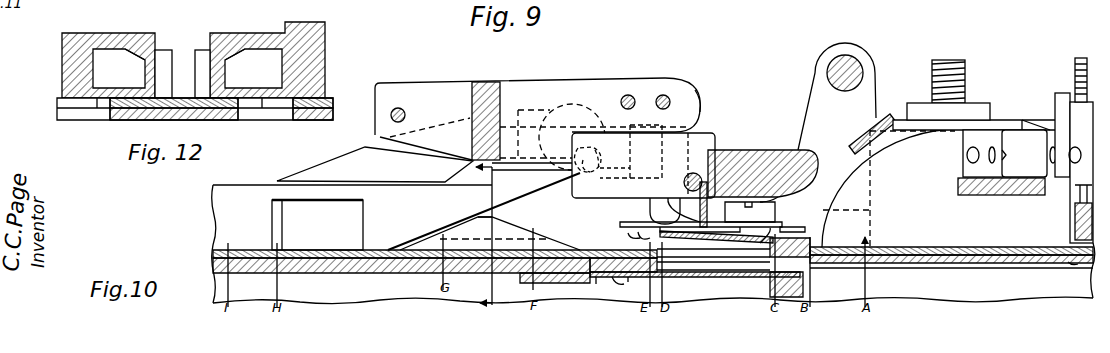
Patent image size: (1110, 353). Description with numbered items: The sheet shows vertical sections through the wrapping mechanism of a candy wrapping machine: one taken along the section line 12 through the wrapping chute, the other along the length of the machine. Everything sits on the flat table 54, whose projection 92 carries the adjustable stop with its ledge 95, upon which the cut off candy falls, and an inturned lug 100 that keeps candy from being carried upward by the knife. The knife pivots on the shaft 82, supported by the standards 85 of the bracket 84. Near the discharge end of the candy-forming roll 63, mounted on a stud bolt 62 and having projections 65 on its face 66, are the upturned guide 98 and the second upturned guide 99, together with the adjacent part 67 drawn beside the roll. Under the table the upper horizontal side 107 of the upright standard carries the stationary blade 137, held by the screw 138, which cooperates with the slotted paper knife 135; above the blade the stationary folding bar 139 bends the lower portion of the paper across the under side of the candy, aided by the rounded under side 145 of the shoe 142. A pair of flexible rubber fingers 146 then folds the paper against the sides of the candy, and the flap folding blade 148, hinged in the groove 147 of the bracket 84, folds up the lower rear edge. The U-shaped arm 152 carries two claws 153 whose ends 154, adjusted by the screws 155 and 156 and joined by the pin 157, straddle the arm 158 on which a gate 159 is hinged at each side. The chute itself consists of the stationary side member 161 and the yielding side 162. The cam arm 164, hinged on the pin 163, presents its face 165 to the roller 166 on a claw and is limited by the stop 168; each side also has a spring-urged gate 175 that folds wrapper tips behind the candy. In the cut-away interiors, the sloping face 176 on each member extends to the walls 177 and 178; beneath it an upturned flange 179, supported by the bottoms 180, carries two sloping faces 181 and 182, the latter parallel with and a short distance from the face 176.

In FIG. 10, the section line 12 is at (511, 235).
In FIG. 12, the table 54 is at (330, 100).
In FIG. 10, the table 54 is at (213, 250).
In FIG. 10, the stud bolt 62 is at (948, 81).
In FIG. 10, the candy-forming roll 63 is at (1044, 124).
In FIG. 10, the projections 65 is at (1038, 160).
In FIG. 10, the face 66 is at (1030, 146).
In FIG. 10, the block 67 is at (990, 128).
In FIG. 10, the shaft 82 is at (850, 62).
In FIG. 10, the bracket 84 is at (858, 210).
In FIG. 10, the standards 85 is at (837, 96).
In FIG. 10, the projection 92 is at (940, 247).
In FIG. 10, the ledge 95 is at (1000, 196).
In FIG. 10, the upturned guide 98 is at (1062, 93).
In FIG. 10, the second upturned guide 99 is at (891, 188).
In FIG. 10, the inturned lug 100 is at (888, 112).
In FIG. 10, the upper horizontal side 107 is at (360, 273).
In FIG. 10, the slotted paper knife 135 is at (1085, 270).
In FIG. 10, the stationary blade 137 is at (705, 277).
In FIG. 10, the screw 138 is at (614, 278).
In FIG. 10, the stationary folding bar 139 is at (805, 265).
In FIG. 10, the shoe 142 is at (760, 152).
In FIG. 10, the under side 145 is at (796, 186).
In FIG. 10, the flexible rubber fingers 146 is at (780, 205).
In FIG. 10, the groove 147 is at (813, 239).
In FIG. 10, the flap folding blade 148 is at (662, 240).
In FIG. 10, the U-shaped arm 152 is at (537, 119).
In FIG. 10, the claws 153 is at (696, 108).
In FIG. 10, the ends 154 is at (650, 208).
In FIG. 10, the screw 155 is at (404, 100).
In FIG. 10, the screw 156 is at (630, 97).
In FIG. 10, the pin 157 is at (672, 85).
In FIG. 10, the arm 158 is at (705, 138).
In FIG. 10, the gate 159 is at (718, 150).
In FIG. 12, the stationary side member 161 is at (108, 56).
In FIG. 10, the stationary side member 161 is at (653, 244).
In FIG. 12, the yielding side 162 is at (267, 56).
In FIG. 10, the pin 163 is at (648, 127).
In FIG. 10, the cam arm 164 is at (528, 125).
In FIG. 10, the face 165 is at (362, 146).
In FIG. 10, the roller 166 is at (563, 94).
In FIG. 10, the stop 168 is at (596, 176).
In FIG. 12, the spring-urged gate 175 is at (166, 50).
In FIG. 10, the spring-urged gate 175 is at (317, 225).
In FIG. 12, the sloping face 176 is at (210, 60).
In FIG. 10, the sloping face 176 is at (530, 192).
In FIG. 12, the wall 177 is at (80, 69).
In FIG. 12, the wall 178 is at (290, 56).
In FIG. 12, the upturned flange 179 is at (148, 79).
In FIG. 10, the upturned flange 179 is at (497, 228).
In FIG. 12, the bottoms 180 is at (106, 98).
In FIG. 10, the sloping face 181 is at (524, 232).
In FIG. 10, the sloping face 182 is at (470, 214).